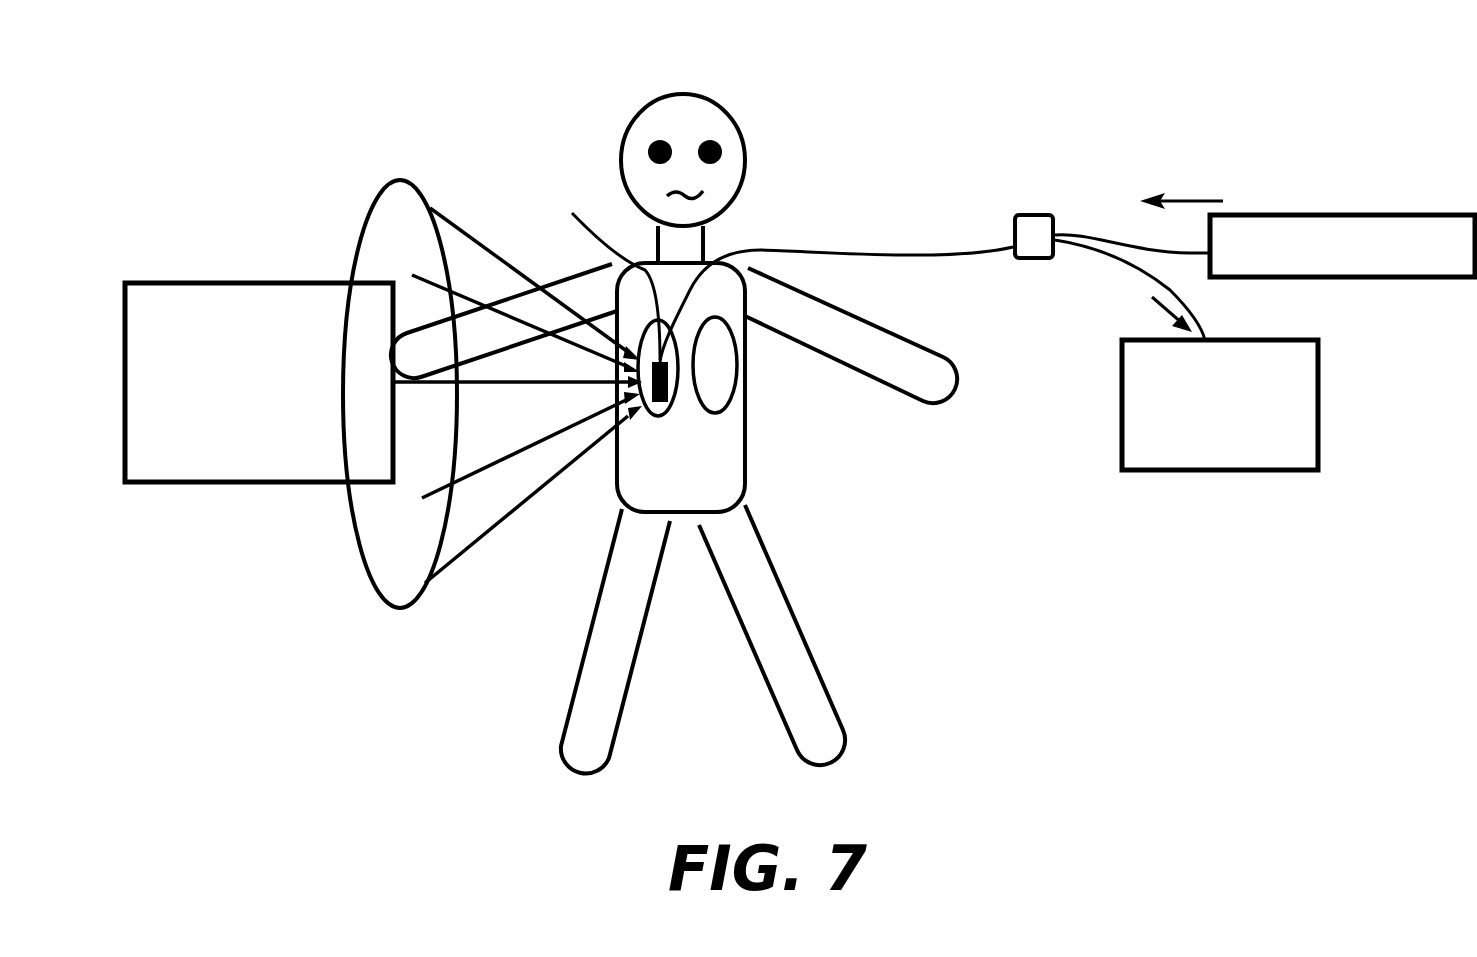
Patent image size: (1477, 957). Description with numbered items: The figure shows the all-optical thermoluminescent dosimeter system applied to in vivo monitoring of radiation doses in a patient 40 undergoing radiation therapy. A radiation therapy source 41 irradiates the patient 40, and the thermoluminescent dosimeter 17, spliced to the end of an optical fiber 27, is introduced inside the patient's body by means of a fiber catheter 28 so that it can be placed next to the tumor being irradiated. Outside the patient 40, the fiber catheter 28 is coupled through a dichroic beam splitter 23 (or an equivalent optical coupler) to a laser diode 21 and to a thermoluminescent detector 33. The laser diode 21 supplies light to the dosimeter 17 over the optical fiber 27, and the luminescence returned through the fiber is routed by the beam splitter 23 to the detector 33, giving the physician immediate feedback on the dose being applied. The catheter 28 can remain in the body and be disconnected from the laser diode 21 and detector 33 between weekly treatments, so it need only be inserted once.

The patient 40 is at (790, 52).
The radiation therapy source 41 is at (247, 283).
The optical fiber 27 is at (595, 278).
The fiber catheter 28 is at (882, 217).
The dichroic beam splitter 23 is at (1033, 259).
The optical source 21 is at (1372, 215).
The thermoluminescent detector 33 is at (1320, 396).
The thermoluminescent glass dosimeter 17 is at (678, 404).